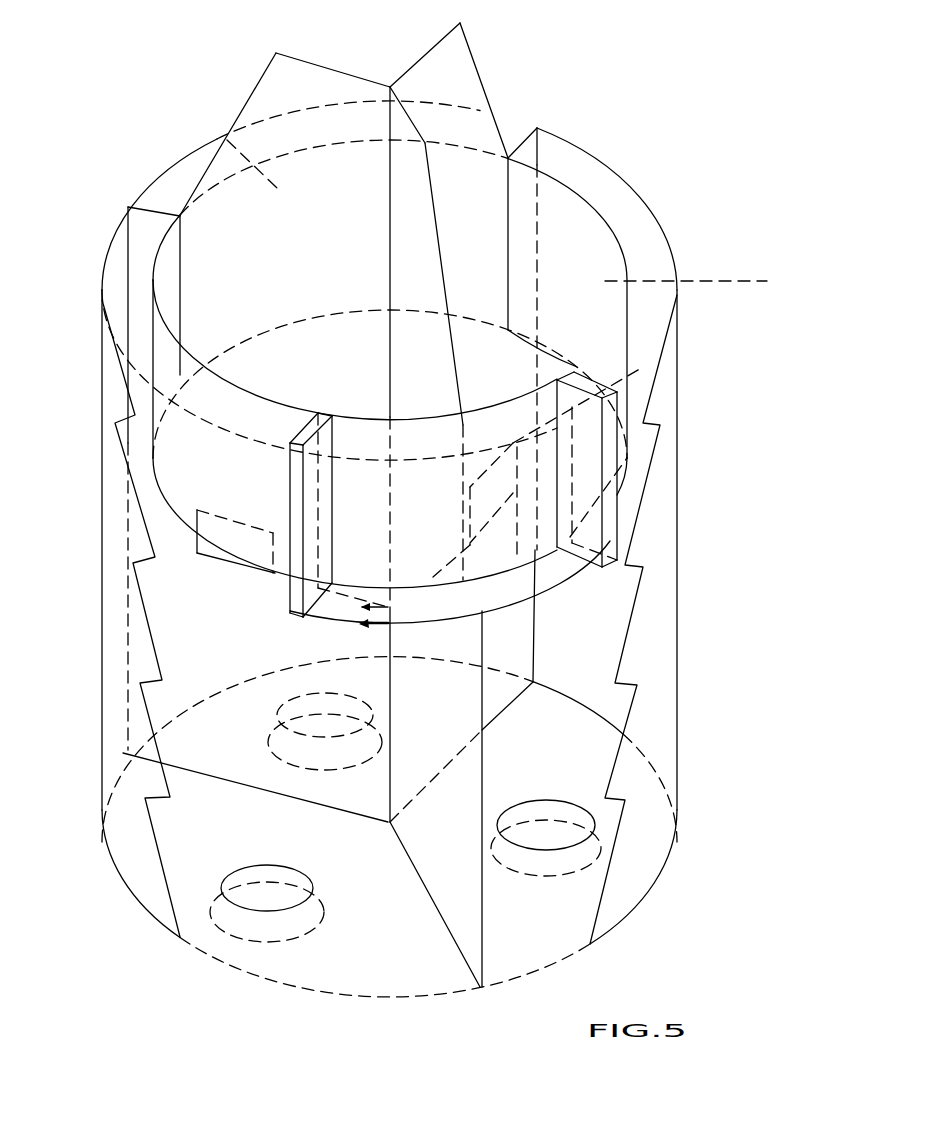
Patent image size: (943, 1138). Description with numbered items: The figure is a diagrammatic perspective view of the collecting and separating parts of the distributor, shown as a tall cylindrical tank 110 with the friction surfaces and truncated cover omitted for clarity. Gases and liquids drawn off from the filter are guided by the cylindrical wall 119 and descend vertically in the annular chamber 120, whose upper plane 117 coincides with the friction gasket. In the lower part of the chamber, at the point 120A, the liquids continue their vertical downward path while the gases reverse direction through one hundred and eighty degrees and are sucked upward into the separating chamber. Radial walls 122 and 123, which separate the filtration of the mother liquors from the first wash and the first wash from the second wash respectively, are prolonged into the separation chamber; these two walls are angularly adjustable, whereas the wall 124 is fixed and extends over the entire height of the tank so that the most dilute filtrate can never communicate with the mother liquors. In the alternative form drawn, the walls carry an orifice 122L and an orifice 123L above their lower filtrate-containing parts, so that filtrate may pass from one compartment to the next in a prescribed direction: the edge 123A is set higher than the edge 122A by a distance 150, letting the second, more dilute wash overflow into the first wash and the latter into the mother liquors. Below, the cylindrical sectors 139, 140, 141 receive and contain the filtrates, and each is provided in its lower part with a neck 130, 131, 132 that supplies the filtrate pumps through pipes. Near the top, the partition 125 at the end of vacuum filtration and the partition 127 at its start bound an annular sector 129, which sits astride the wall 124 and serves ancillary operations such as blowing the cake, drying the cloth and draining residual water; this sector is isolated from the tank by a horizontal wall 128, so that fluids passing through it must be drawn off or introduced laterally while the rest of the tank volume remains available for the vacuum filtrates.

The cylindrical housing body 110 is at (677, 522).
The upper plane 117 is at (686, 269).
The cylindrical wall 119 is at (153, 334).
The annular chamber 120 is at (610, 182).
The point in lower part of chamber 120A is at (150, 443).
The radial wall 122 is at (525, 152).
The edge 122A is at (462, 535).
The orifice 122L is at (468, 484).
The radial wall 123 is at (259, 248).
The edge 123A is at (262, 571).
The orifice 123L is at (248, 508).
The fixed wall 124 is at (441, 250).
The partition at end of vacuum filtration 125 is at (318, 413).
The partition at start of vacuum filtration 127 is at (612, 388).
The horizontal wall 128 is at (580, 575).
The annular sector 129 is at (562, 405).
The neck 130 is at (537, 883).
The neck 131 is at (277, 728).
The neck 132 is at (248, 865).
The cylindrical sector 139 is at (558, 766).
The cylindrical sector 140 is at (372, 690).
The cylindrical sector 141 is at (383, 964).
The distance 150 is at (360, 625).